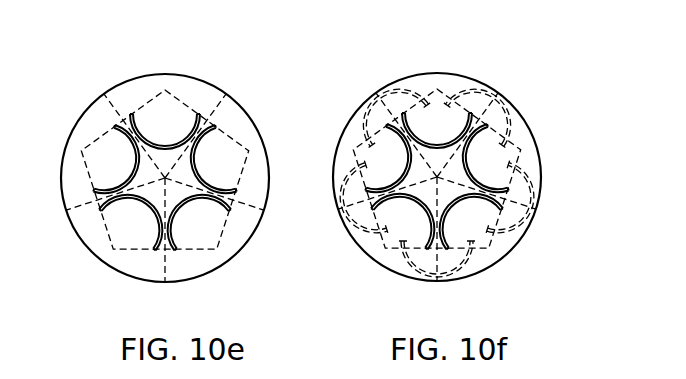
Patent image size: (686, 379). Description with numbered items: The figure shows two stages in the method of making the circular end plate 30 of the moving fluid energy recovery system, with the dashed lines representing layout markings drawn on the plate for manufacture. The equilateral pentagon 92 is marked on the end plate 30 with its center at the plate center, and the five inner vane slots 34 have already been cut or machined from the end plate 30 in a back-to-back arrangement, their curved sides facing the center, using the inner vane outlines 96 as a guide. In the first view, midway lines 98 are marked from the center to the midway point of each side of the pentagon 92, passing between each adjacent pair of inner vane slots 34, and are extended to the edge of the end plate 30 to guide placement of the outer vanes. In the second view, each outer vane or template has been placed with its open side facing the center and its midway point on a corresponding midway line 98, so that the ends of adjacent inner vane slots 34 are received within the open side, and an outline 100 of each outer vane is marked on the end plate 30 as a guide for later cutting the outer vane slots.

In FIG. 10E, the end plate 30 is at (163, 74).
In FIG. 10F, the end plate 30 is at (434, 73).
In FIG. 10E, the inner vane slot 34 is at (118, 128).
In FIG. 10F, the inner vane slot 34 is at (387, 129).
In FIG. 10E, the equilateral pentagon 92 is at (187, 104).
In FIG. 10F, the equilateral pentagon 92 is at (448, 94).
In FIG. 10E, the outline of inner vane 96 is at (134, 156).
In FIG. 10E, the midway line 98 is at (91, 195).
In FIG. 10F, the midway line 98 is at (492, 121).
In FIG. 10F, the outline of outer vane 100 is at (384, 103).